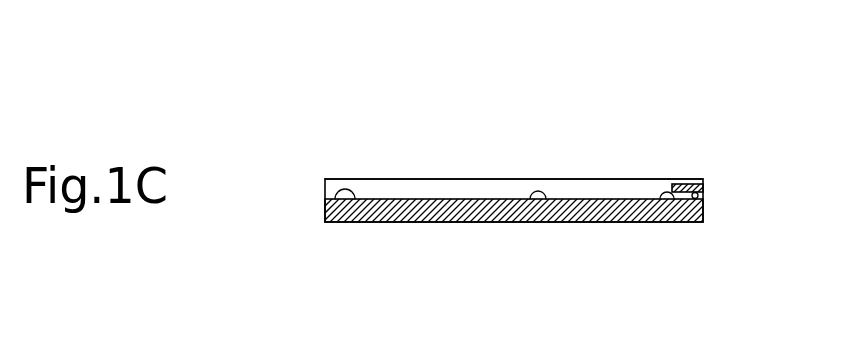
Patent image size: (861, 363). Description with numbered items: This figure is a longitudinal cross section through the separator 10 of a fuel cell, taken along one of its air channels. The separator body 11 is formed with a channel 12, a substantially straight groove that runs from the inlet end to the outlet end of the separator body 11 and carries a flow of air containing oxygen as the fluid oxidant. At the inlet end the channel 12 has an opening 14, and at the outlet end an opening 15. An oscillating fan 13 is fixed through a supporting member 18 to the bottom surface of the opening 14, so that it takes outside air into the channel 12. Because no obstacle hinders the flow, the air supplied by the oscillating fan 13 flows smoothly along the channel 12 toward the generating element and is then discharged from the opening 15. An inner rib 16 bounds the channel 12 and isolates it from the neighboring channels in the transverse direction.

The separator 10 is at (361, 112).
The separator body 11 is at (690, 223).
The channel 12 is at (530, 200).
The oscillating fan 13 is at (703, 187).
The opening 14 is at (655, 200).
The opening 15 is at (362, 200).
The inner rib 16 is at (568, 178).
The supporting member 18 is at (704, 197).